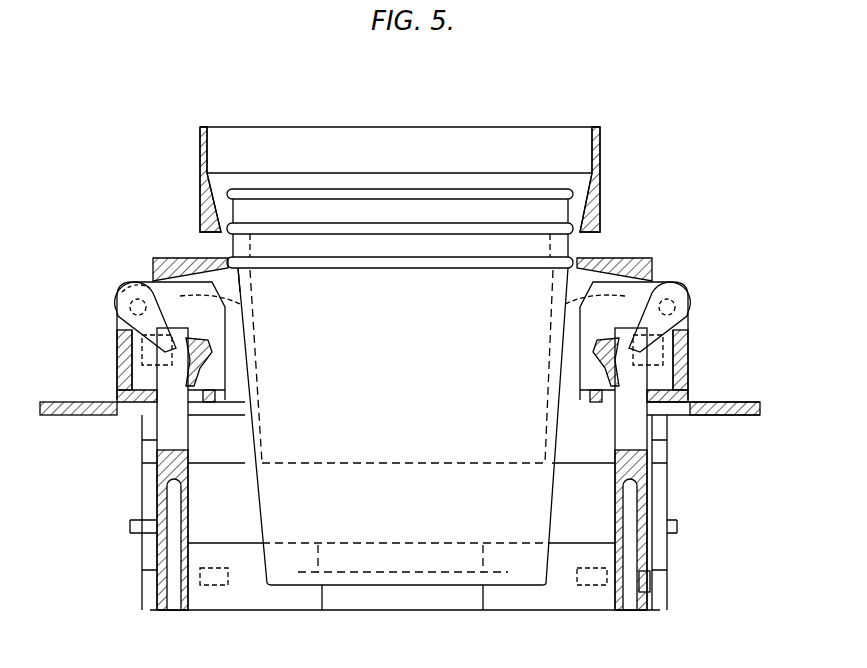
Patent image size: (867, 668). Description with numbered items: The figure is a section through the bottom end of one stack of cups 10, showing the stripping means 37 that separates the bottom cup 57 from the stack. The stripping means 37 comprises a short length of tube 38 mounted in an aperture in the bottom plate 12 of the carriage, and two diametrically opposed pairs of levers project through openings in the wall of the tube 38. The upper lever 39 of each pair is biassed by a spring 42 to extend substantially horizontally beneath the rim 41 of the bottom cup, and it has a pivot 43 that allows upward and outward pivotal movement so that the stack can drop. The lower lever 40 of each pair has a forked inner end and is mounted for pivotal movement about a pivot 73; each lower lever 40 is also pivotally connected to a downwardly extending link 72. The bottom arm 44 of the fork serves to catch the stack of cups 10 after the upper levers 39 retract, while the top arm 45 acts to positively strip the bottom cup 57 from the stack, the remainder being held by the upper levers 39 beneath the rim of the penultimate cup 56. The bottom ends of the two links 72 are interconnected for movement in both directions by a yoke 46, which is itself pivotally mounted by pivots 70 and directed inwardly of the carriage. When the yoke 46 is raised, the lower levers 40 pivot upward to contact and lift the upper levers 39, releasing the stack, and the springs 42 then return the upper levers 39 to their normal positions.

The cup 10 is at (314, 189).
The bottom plate 12 is at (728, 406).
The stripping means 37 is at (128, 274).
The tube 38 is at (200, 156).
The upper lever 39 is at (168, 258).
The lower lever 40 is at (150, 316).
The rim 41 is at (230, 262).
The spring 42 is at (135, 362).
The pivot 43 is at (132, 352).
The bottom arm 44 is at (205, 377).
The top arm 45 is at (218, 336).
The yoke 46 is at (652, 576).
The penultimate cup 56 is at (522, 246).
The bottom cup 57 is at (502, 518).
The pivot 70 is at (222, 590).
The link 72 is at (163, 468).
The pivot 73 is at (122, 288).